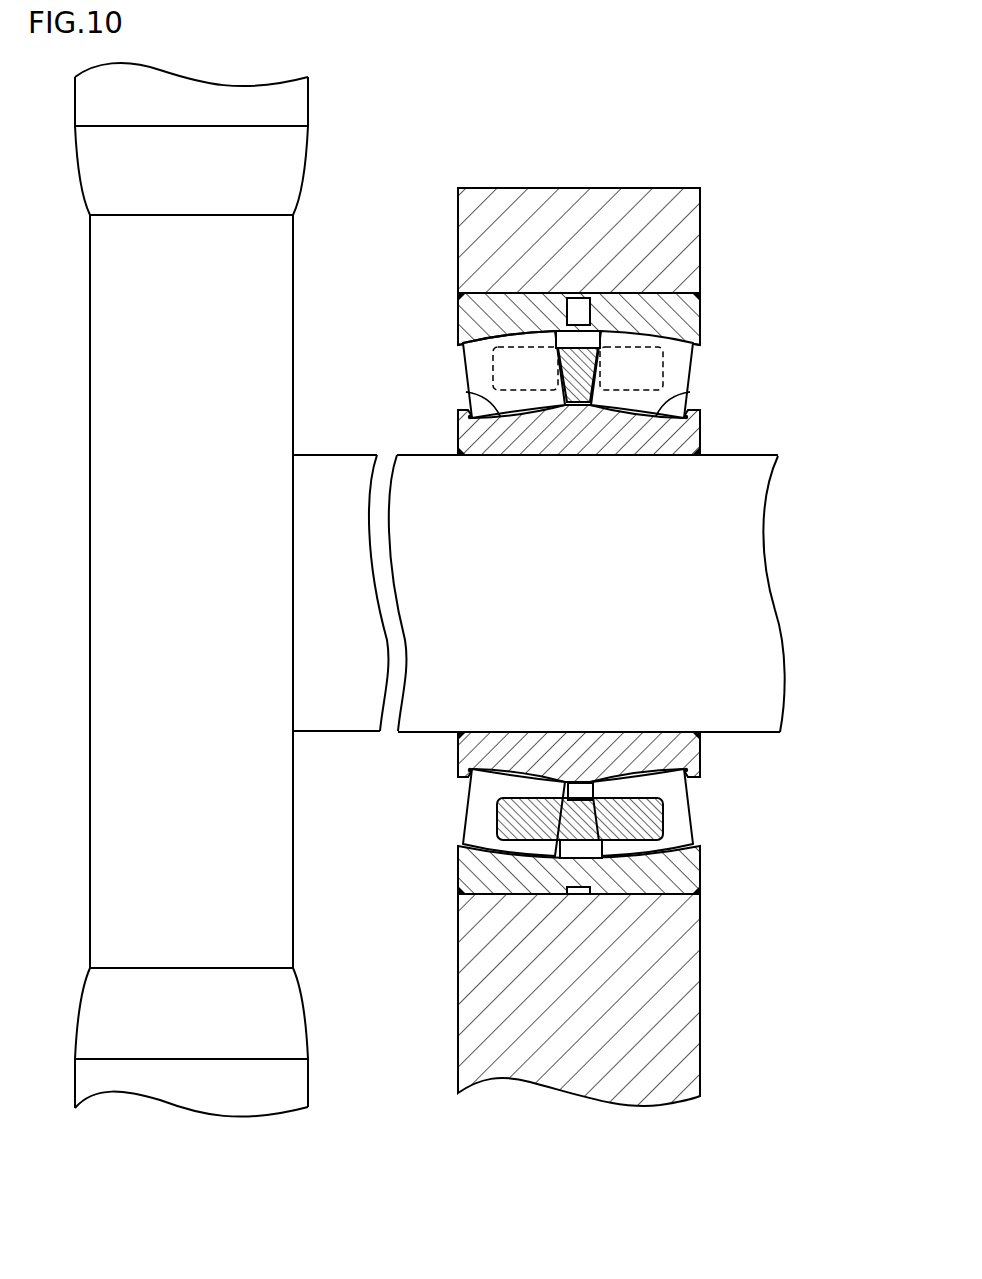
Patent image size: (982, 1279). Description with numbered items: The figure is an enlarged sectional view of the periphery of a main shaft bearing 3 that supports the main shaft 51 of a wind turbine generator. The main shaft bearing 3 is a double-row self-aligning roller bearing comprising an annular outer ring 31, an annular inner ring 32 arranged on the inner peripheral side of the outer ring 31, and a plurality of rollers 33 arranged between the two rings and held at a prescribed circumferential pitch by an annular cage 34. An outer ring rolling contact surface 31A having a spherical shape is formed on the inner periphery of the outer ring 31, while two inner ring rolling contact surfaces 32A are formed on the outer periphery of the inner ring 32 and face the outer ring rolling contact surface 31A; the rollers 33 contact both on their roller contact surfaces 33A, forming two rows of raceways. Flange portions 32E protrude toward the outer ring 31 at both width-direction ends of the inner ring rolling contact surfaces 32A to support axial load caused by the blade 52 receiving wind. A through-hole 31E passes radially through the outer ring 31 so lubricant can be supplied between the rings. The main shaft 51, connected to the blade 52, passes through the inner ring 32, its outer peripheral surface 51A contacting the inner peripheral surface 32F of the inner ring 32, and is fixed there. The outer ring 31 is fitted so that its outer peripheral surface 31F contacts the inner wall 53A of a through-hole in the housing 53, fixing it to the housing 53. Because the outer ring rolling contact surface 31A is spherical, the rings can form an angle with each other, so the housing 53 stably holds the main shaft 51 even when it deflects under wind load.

The main shaft bearing 3 is at (719, 306).
The outer ring 31 is at (468, 318).
The outer ring rolling contact surface 31A is at (628, 335).
The through-hole 31E is at (578, 302).
The outer peripheral surface 31F is at (493, 902).
The inner ring 32 is at (690, 446).
The inner ring rolling contact surfaces 32A is at (478, 397).
The flange portions 32E is at (465, 417).
The inner peripheral surface 32F is at (647, 733).
The rollers 33 is at (478, 362).
The roller contact surfaces 33A is at (458, 295).
The cage 34 is at (573, 357).
The main shaft 51 is at (335, 473).
The outer peripheral surface 51A is at (743, 733).
The blade 52 is at (283, 168).
The housing 53 is at (658, 210).
The inner wall 53A is at (670, 893).